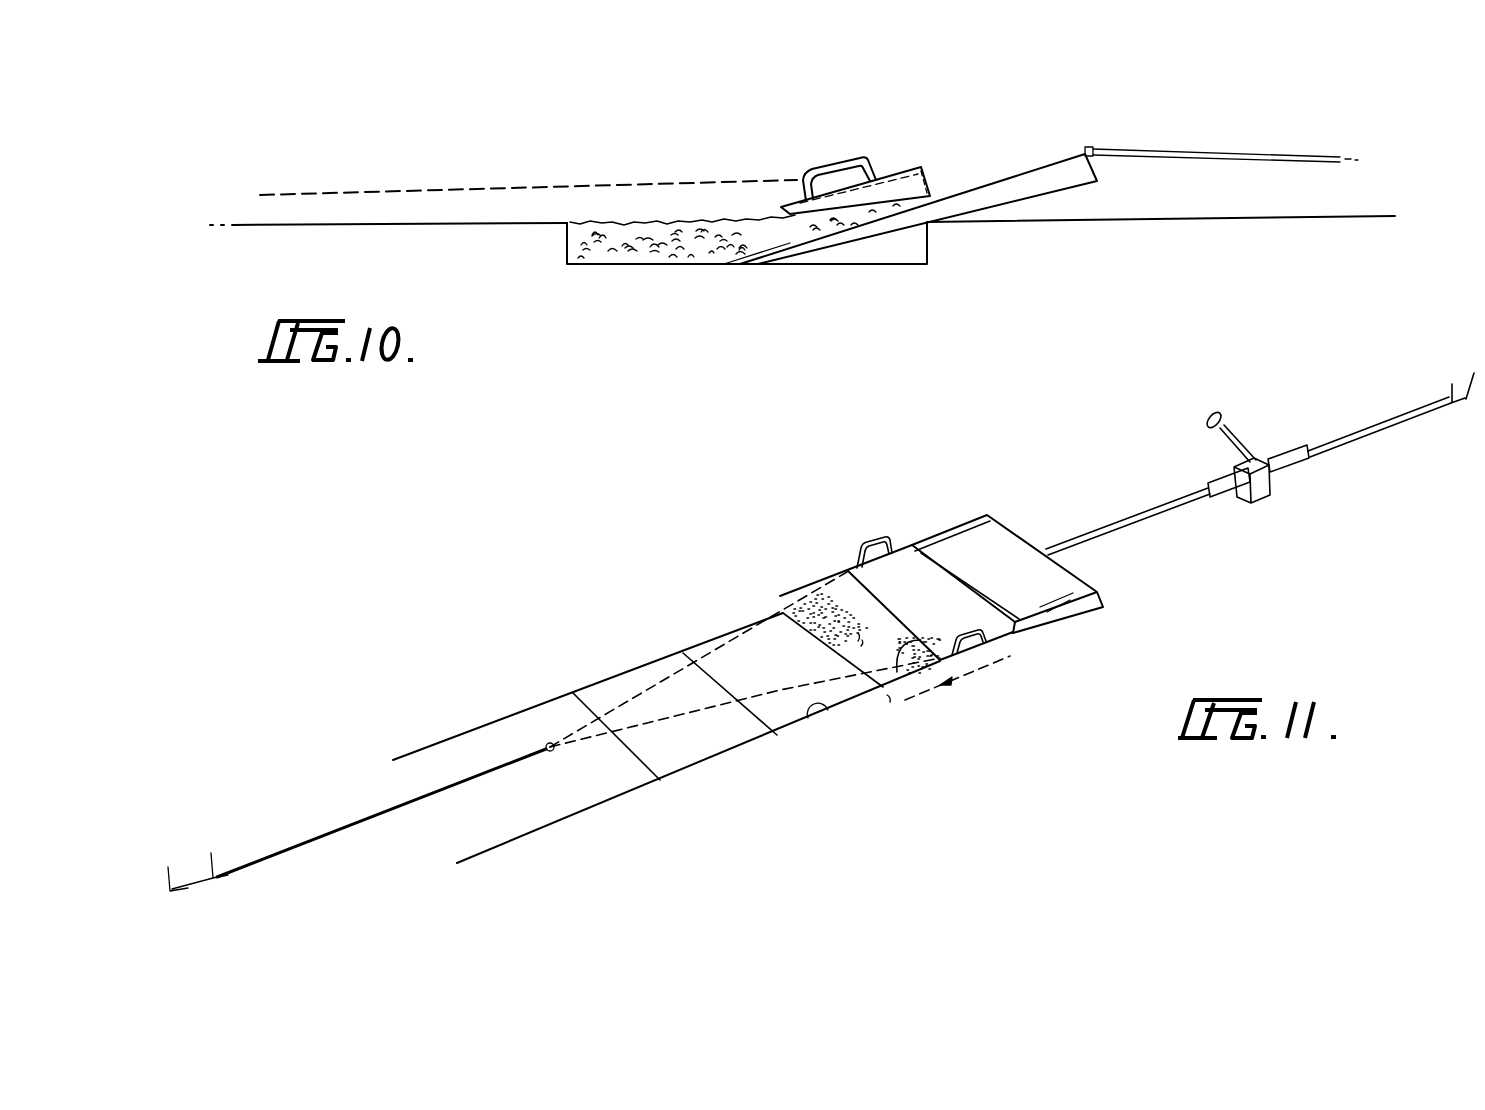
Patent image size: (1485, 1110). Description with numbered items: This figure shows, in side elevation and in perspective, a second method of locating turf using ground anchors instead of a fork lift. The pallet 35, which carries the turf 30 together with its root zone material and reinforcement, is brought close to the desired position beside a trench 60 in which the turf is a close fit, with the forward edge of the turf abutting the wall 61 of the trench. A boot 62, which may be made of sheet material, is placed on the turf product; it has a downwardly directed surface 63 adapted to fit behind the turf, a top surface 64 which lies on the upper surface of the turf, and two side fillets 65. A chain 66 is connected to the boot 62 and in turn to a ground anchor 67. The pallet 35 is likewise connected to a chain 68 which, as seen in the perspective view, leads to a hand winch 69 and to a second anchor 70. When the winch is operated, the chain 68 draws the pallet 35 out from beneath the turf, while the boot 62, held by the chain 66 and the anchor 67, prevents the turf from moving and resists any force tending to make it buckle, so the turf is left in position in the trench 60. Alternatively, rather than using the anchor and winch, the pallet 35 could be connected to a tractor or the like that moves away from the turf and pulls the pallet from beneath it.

In FIG. 10, the cable 30 is at (728, 210).
In FIG. 10, the pallet 35 is at (1038, 164).
In FIG. 11, the pallet 35 is at (994, 507).
In FIG. 10, the trench 60 is at (687, 272).
In FIG. 11, the trench 60 is at (833, 716).
In FIG. 10, the wall of the trench 61 is at (567, 250).
In FIG. 11, the wall of the trench 61 is at (893, 655).
In FIG. 10, the boot 62 is at (902, 158).
In FIG. 11, the boot 62 is at (920, 532).
In FIG. 10, the downwardly directed surface 63 is at (928, 181).
In FIG. 10, the top surface 64 is at (840, 192).
In FIG. 11, the top surface 64 is at (883, 590).
In FIG. 11, the side fillets 65 is at (1002, 633).
In FIG. 10, the chain 66 is at (527, 187).
In FIG. 11, the chain 66 is at (637, 697).
In FIG. 11, the ground anchor 67 is at (233, 851).
In FIG. 10, the chain 68 is at (1193, 150).
In FIG. 11, the chain 68 is at (1112, 527).
In FIG. 11, the hand winch 69 is at (1265, 438).
In FIG. 11, the second anchor 70 is at (1437, 390).